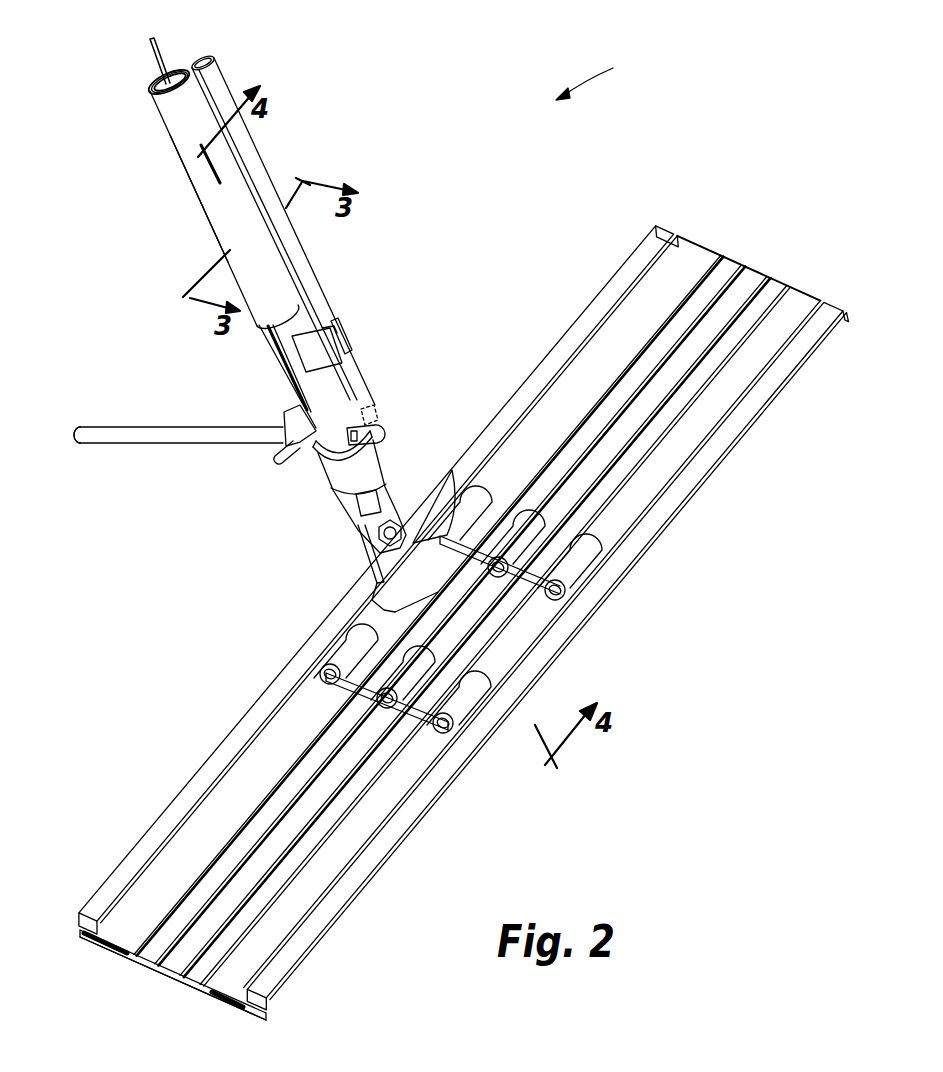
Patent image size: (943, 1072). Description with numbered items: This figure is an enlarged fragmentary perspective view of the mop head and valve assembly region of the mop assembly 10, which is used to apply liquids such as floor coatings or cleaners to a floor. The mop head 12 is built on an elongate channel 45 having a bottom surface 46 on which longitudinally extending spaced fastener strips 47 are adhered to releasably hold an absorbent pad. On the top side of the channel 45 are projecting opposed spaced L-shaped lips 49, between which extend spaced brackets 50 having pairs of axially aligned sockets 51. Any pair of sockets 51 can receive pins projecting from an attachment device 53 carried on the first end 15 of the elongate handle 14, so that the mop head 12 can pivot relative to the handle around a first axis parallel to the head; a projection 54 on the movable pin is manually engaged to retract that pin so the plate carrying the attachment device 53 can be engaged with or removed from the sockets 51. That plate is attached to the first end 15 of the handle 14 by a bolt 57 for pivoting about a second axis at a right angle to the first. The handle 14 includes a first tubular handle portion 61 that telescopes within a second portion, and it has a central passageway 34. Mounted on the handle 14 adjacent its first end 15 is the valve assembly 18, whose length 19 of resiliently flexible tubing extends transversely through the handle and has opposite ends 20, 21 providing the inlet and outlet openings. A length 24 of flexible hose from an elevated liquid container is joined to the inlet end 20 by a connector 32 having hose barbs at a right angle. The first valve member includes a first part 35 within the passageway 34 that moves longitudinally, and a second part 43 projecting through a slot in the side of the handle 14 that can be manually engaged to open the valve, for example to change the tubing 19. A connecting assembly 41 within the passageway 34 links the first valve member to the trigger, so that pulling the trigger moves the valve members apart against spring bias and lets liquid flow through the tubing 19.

The mop assembly 10 is at (598, 79).
The mop head 12 is at (681, 525).
The elongate handle 14 is at (182, 141).
The first end of the handle 15 is at (268, 353).
The valve assembly 18 is at (287, 388).
The length of tubing 19 is at (176, 438).
The end of the tubing 20 is at (363, 455).
The end of the tubing 21 is at (78, 413).
The length of flexible hose 24 is at (313, 290).
The connector 32 is at (372, 431).
The central passageway 34 is at (162, 85).
The first part of the first member 35 is at (378, 578).
The connecting assembly 41 is at (160, 53).
The second part of the first member 43 is at (300, 449).
The elongate channel 45 is at (742, 412).
The bottom surface 46 is at (191, 986).
The fastener strips 47 is at (105, 948).
The L-shaped lips 49 is at (172, 810).
The brackets 50 is at (586, 574).
The sockets 51 is at (558, 597).
The attachment device 53 is at (384, 607).
The projection 54 is at (450, 537).
The bolt 57 is at (405, 540).
The first tubular handle portion 61 is at (206, 197).